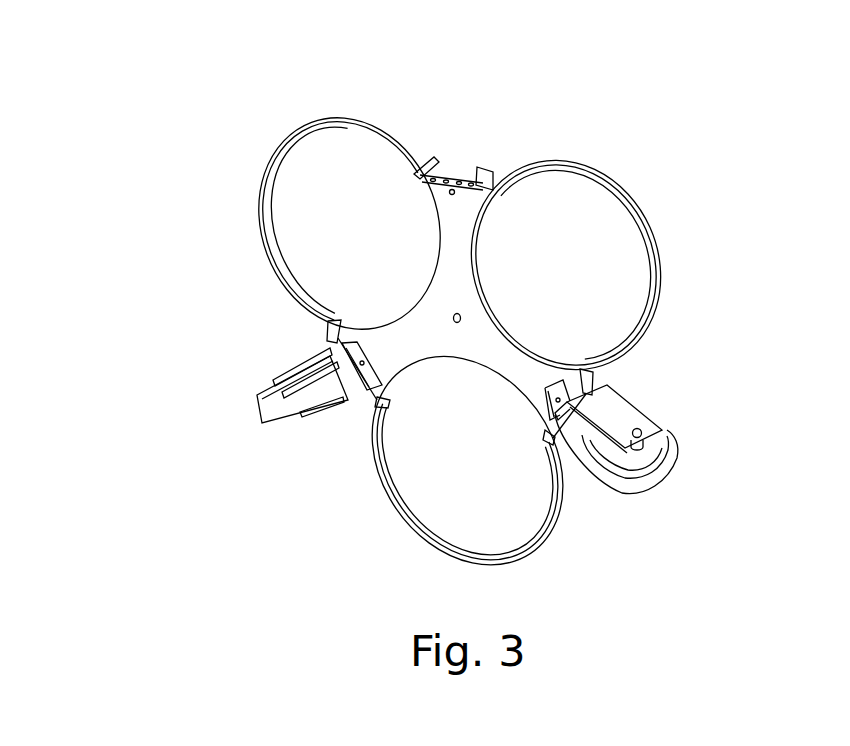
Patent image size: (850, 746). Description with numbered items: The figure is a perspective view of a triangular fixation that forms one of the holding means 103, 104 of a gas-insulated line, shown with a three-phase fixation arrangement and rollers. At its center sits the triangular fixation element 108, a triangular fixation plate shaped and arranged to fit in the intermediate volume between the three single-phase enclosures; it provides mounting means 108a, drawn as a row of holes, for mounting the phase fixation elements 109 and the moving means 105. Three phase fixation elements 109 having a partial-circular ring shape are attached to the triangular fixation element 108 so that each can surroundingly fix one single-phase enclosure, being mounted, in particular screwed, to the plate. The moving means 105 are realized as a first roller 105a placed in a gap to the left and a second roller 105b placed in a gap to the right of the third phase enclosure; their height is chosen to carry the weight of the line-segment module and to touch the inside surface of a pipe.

The first holding means 103 is at (190, 145).
The second holding means 104 is at (504, 312).
The moving means 105 is at (525, 437).
The first roller 105a is at (298, 395).
The second roller 105b is at (680, 478).
The triangular fixation element 108 is at (462, 235).
The mounting means 108a is at (466, 181).
The phase fixation element 109 is at (283, 138).